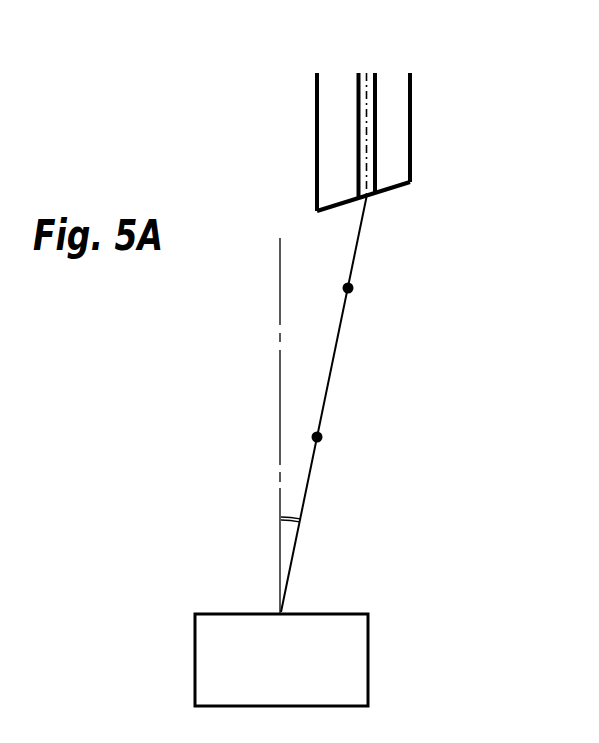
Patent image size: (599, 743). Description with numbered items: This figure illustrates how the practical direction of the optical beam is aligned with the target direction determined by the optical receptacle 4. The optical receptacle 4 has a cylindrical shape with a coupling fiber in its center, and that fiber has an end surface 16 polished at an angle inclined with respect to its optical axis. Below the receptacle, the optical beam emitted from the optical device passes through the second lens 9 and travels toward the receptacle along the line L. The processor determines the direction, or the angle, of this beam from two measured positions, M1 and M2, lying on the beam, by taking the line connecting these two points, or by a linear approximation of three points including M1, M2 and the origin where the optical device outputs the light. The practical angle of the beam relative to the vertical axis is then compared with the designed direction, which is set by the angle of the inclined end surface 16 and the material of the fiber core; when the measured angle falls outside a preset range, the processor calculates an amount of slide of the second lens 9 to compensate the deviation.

The optical receptacle 4 is at (328, 130).
The end surface 16 is at (390, 194).
The optical beam line L is at (336, 352).
The second position M2 is at (354, 288).
The first position M1 is at (323, 437).
The second lens 9 is at (357, 660).